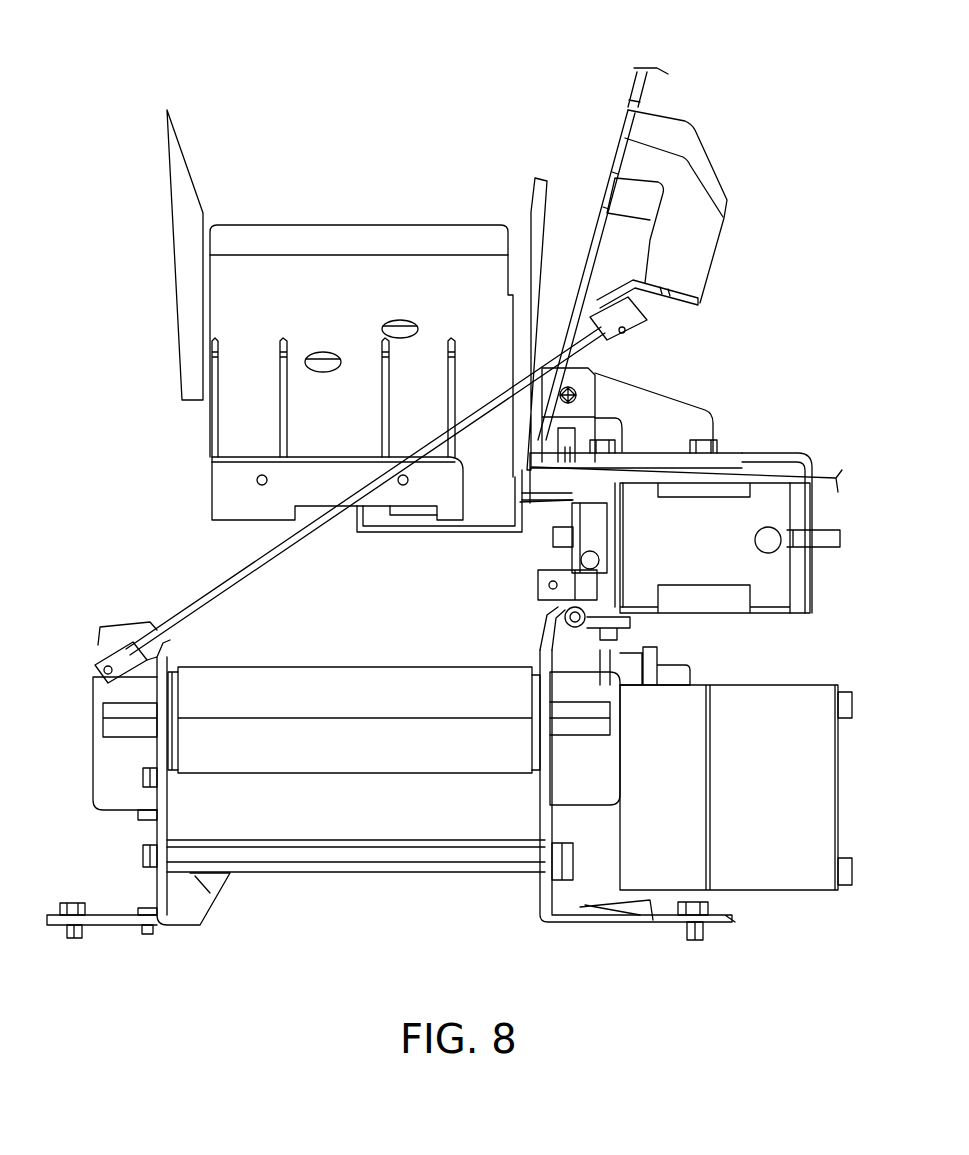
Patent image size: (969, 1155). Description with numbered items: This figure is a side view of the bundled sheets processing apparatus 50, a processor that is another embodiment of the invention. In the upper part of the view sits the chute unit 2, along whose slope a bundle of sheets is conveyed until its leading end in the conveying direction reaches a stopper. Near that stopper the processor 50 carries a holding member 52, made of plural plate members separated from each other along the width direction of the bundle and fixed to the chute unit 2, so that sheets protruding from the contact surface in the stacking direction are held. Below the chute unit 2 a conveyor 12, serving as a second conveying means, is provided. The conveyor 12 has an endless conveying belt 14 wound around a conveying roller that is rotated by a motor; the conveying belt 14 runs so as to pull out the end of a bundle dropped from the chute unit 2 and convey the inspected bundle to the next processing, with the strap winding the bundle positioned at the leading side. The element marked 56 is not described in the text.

The bundled sheets processing apparatus 50 is at (484, 88).
The chute unit 2 is at (318, 268).
The holding member 52 is at (278, 372).
The connector bracket 56 is at (633, 323).
The conveyor 12 is at (343, 663).
The conveying belt 14 is at (428, 663).